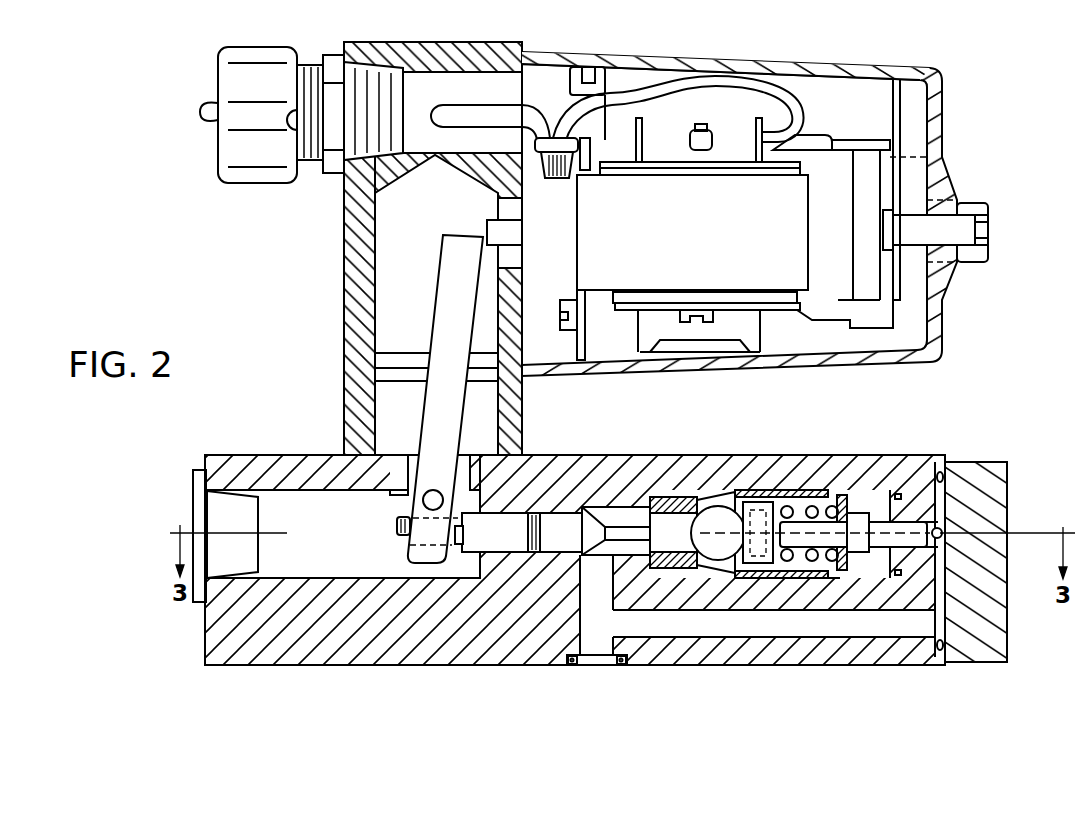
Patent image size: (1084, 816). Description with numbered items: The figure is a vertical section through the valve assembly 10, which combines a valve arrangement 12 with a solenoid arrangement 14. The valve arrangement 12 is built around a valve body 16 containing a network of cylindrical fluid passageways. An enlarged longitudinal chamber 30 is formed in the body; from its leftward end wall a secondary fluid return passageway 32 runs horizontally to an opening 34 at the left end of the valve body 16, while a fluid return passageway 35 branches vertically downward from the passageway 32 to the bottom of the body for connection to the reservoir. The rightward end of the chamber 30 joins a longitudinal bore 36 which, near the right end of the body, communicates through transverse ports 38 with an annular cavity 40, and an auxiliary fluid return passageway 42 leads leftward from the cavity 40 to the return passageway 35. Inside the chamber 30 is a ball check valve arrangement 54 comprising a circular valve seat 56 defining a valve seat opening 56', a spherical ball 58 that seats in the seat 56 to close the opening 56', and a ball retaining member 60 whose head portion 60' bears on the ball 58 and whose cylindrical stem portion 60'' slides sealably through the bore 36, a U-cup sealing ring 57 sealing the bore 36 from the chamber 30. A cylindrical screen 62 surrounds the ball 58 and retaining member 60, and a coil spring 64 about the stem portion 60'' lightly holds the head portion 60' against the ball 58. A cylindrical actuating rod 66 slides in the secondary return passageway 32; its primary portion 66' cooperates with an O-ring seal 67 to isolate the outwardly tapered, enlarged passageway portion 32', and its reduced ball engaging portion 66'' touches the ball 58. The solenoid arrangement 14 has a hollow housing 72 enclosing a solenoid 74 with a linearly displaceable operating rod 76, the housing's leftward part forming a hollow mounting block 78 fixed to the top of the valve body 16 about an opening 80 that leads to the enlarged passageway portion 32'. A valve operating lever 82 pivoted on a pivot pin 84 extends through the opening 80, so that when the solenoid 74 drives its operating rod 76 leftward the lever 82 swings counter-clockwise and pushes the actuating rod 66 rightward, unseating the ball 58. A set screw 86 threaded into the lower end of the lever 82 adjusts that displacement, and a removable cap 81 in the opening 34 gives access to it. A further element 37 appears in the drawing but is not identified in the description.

The valve assembly 10 is at (316, 286).
The valve arrangement 12 is at (376, 665).
The solenoid arrangement 14 is at (872, 66).
The valve body 16 is at (503, 665).
The longitudinal chamber 30 is at (762, 502).
The secondary fluid return passageway 32 is at (616, 490).
The enlarged passageway portion 32' is at (325, 500).
The opening 34 is at (215, 488).
The fluid return passageway 35 is at (570, 657).
The longitudinal bore 36 is at (912, 490).
The bottom fitting 37 is at (606, 665).
The transverse ports 38 is at (943, 533).
The annular cavity 40 is at (958, 462).
The auxiliary fluid return passageway 42 is at (886, 625).
The ball check valve arrangement 54 is at (750, 482).
The circular valve seat 56 is at (670, 488).
The valve seat opening 56' is at (706, 499).
The U-cup type sealing ring 57 is at (855, 522).
The spherical ball 58 is at (705, 547).
The ball retaining member 60 is at (795, 640).
The head portion 60' is at (761, 640).
The cylindrical stem portion 60'' is at (840, 640).
The cylindrical screen 62 is at (800, 505).
The coil spring 64 is at (840, 495).
The cylindrical actuating rod 66 is at (495, 532).
The primary portion 66' is at (567, 480).
The ball engaging portion 66'' is at (616, 476).
The O-ring seal 67 is at (532, 513).
The housing 72 is at (630, 52).
The solenoid 74 is at (669, 241).
The operating rod 76 is at (487, 232).
The hollow mounting block 78 is at (347, 333).
The opening 80 is at (398, 492).
The removable cap 81 is at (215, 600).
The valve operating lever 82 is at (437, 290).
The pivot pin 84 is at (433, 490).
The set screw 86 is at (397, 530).